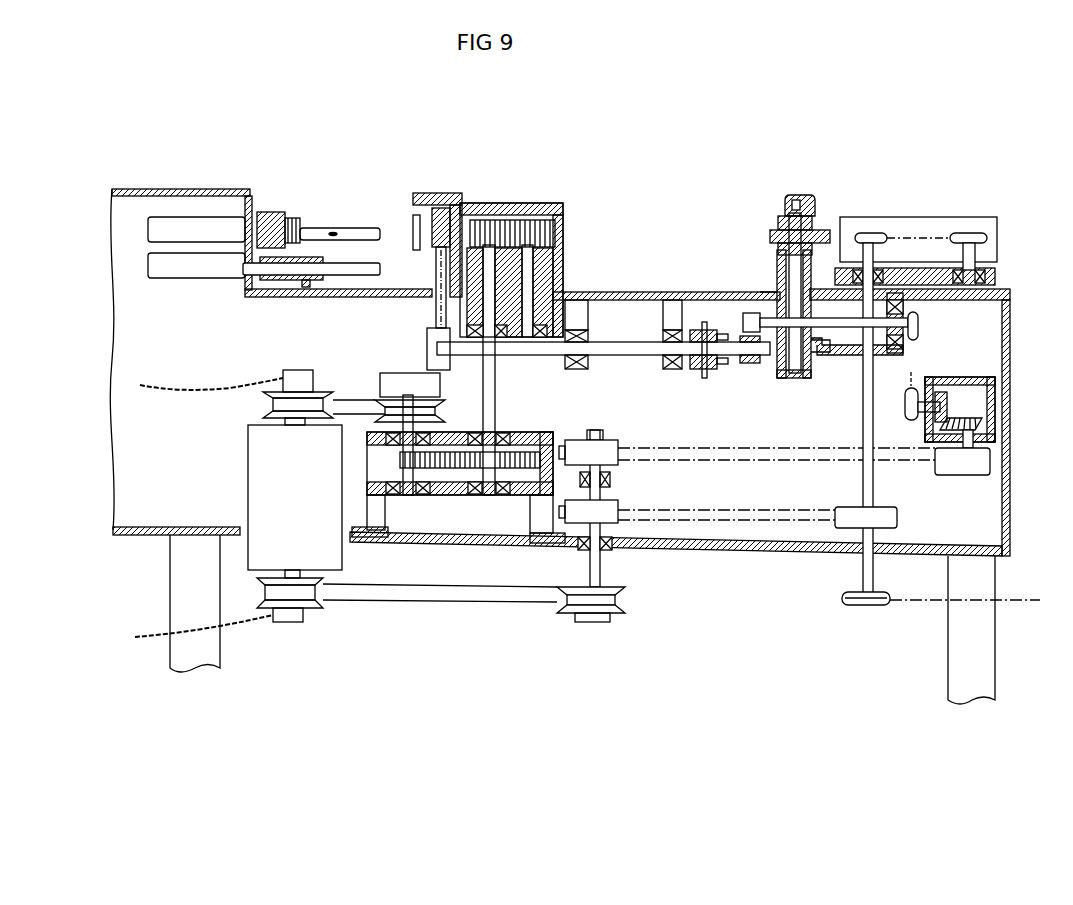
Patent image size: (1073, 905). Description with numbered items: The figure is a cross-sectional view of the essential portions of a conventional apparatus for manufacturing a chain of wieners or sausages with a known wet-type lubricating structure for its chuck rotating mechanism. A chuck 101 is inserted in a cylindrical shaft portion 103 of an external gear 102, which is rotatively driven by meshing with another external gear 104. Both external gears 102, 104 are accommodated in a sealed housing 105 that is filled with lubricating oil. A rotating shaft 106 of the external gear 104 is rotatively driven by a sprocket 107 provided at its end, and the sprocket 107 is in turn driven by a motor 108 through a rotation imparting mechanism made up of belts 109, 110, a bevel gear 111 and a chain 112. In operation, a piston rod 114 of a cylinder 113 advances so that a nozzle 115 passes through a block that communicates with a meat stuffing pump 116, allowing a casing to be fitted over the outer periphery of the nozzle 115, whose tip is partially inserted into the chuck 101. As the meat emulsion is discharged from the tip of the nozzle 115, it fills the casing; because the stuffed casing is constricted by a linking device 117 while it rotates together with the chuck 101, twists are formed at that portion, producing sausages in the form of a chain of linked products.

The chuck 101 is at (786, 262).
The external gear 102 is at (800, 195).
The cylindrical shaft portion 103 is at (829, 248).
The external gear 104 is at (775, 283).
The sealed housing 105 is at (797, 382).
The rotating shaft 106 is at (950, 282).
The sprocket 107 is at (920, 328).
The motor 108 is at (255, 472).
The belt 109 is at (440, 598).
The belt 110 is at (680, 545).
The bevel gear 111 is at (992, 420).
The chain 112 is at (922, 387).
The cylinder 113 is at (173, 222).
The piston rod 114 is at (243, 255).
The nozzle 115 is at (362, 215).
The meat stuffing pump 116 is at (505, 205).
The linking device 117 is at (907, 218).